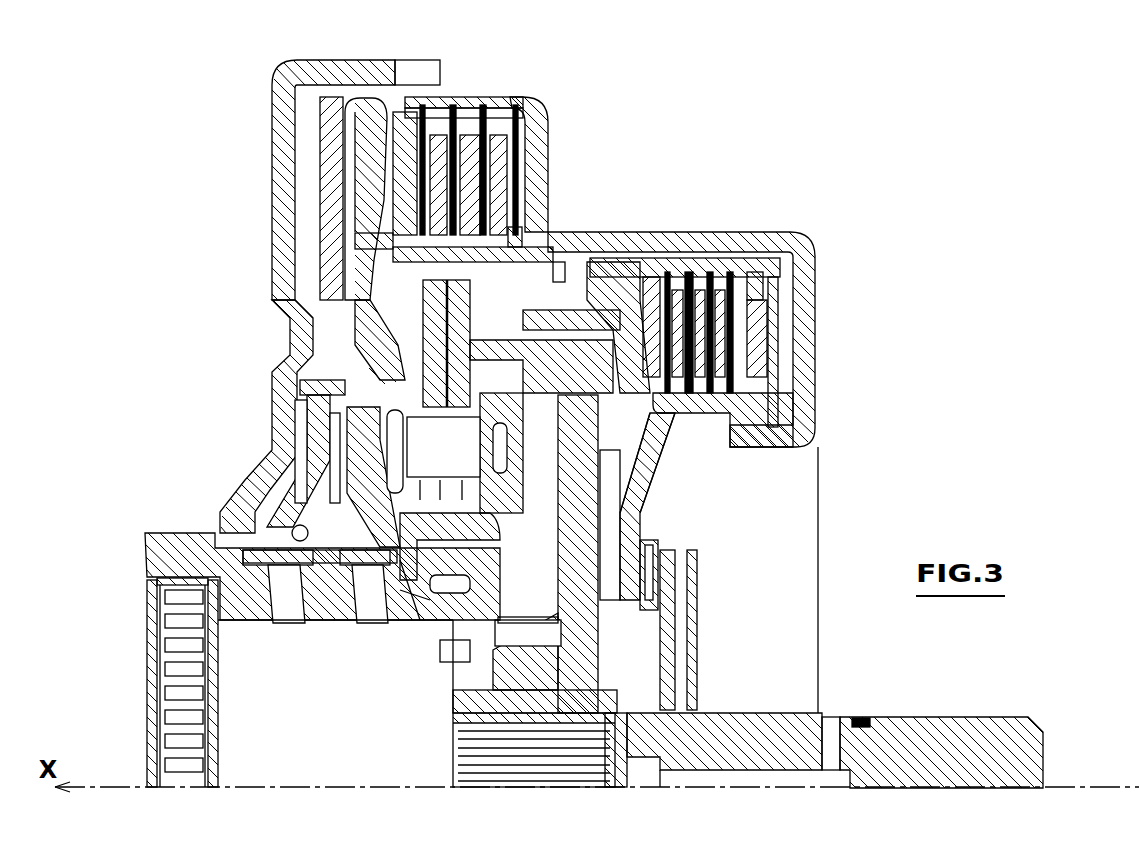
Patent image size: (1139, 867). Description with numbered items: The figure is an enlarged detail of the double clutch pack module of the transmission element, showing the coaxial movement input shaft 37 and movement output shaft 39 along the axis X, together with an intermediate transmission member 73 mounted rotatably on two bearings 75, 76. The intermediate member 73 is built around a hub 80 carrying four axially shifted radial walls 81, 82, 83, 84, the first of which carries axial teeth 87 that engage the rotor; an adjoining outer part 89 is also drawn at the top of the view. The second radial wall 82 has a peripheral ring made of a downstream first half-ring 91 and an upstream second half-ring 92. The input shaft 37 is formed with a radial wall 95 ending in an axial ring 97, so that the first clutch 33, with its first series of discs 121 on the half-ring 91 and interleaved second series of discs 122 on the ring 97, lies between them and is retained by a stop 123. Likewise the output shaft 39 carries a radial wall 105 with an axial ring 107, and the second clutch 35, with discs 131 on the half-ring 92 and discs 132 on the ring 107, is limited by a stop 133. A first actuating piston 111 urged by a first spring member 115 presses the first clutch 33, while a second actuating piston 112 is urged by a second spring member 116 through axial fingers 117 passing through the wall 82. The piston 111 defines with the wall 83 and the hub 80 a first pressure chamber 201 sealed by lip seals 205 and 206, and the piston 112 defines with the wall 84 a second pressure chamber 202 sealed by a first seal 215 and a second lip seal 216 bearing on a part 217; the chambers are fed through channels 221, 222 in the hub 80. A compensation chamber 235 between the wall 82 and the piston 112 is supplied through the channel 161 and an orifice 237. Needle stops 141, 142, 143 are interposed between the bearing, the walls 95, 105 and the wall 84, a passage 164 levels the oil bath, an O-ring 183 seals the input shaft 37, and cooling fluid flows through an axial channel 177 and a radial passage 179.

The first clutch 33 is at (375, 240).
The second clutch 35 is at (790, 391).
The movement input shaft 37 is at (1043, 762).
The movement output shaft 39 is at (455, 730).
The intermediate transmission member 73 is at (240, 640).
The bearing 75 is at (185, 600).
The bearing 76 is at (495, 660).
The hub 80 is at (160, 565).
The first radial wall 81 is at (285, 405).
The second radial wall 82 is at (488, 345).
The third radial wall 83 is at (350, 470).
The fourth radial wall 84 is at (615, 485).
The axial teeth 87 is at (415, 72).
The housing 89 is at (400, 62).
The first half-ring 91 is at (558, 270).
The second half-ring 92 is at (762, 262).
The radial wall 95 is at (655, 490).
The axial ring 97 is at (455, 97).
The radial wall 105 is at (660, 430).
The axial ring 107 is at (770, 432).
The first actuating piston 111 is at (350, 265).
The second actuating piston 112 is at (500, 440).
The first spring member 115 is at (330, 170).
The second spring member 116 is at (415, 350).
The axial fingers 117 is at (600, 300).
The first series of discs 121 is at (440, 185).
The second series of discs 122 is at (420, 155).
The stop 123 is at (540, 250).
The first series of discs 131 is at (710, 275).
The second series of discs 132 is at (740, 352).
The stop 133 is at (765, 286).
The first needle stop 141 is at (675, 579).
The second needle stop 142 is at (630, 665).
The third needle stop 143 is at (645, 630).
The channel 161 is at (357, 615).
The passage 164 is at (285, 314).
The axial channel 177 is at (690, 775).
The radial passage 179 is at (832, 725).
The O-ring 183 is at (862, 722).
The first pressure chamber 201 is at (316, 535).
The second pressure chamber 202 is at (640, 520).
The lip seal 205 is at (307, 393).
The lip seal 206 is at (262, 522).
The first seal 215 is at (635, 470).
The second lip seal 216 is at (490, 633).
The part 217 is at (415, 620).
The channel 221 is at (282, 615).
The channel 222 is at (445, 612).
The compensation chamber 235 is at (500, 458).
The orifice 237 is at (410, 595).